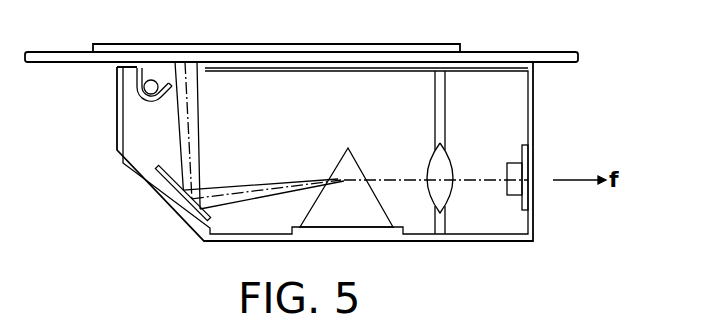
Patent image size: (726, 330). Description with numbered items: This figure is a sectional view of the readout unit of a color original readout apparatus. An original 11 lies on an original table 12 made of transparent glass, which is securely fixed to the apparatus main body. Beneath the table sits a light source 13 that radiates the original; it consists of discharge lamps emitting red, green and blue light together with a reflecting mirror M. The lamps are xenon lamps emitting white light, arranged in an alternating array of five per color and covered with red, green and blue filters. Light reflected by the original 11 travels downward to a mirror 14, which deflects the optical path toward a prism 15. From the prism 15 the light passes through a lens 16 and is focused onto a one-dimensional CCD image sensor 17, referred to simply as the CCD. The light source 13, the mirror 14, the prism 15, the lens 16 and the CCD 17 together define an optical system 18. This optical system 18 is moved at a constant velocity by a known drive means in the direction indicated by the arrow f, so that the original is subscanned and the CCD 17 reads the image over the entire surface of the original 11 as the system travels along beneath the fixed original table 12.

The original 11 is at (397, 44).
The original table 12 is at (535, 52).
The light source 13 is at (137, 88).
The mirror 14 is at (208, 215).
The prism 15 is at (350, 152).
The lens 16 is at (450, 156).
The one-dimensional CCD image sensor 17 is at (506, 187).
The optical system 18 is at (477, 242).
The reflecting mirror M is at (152, 103).